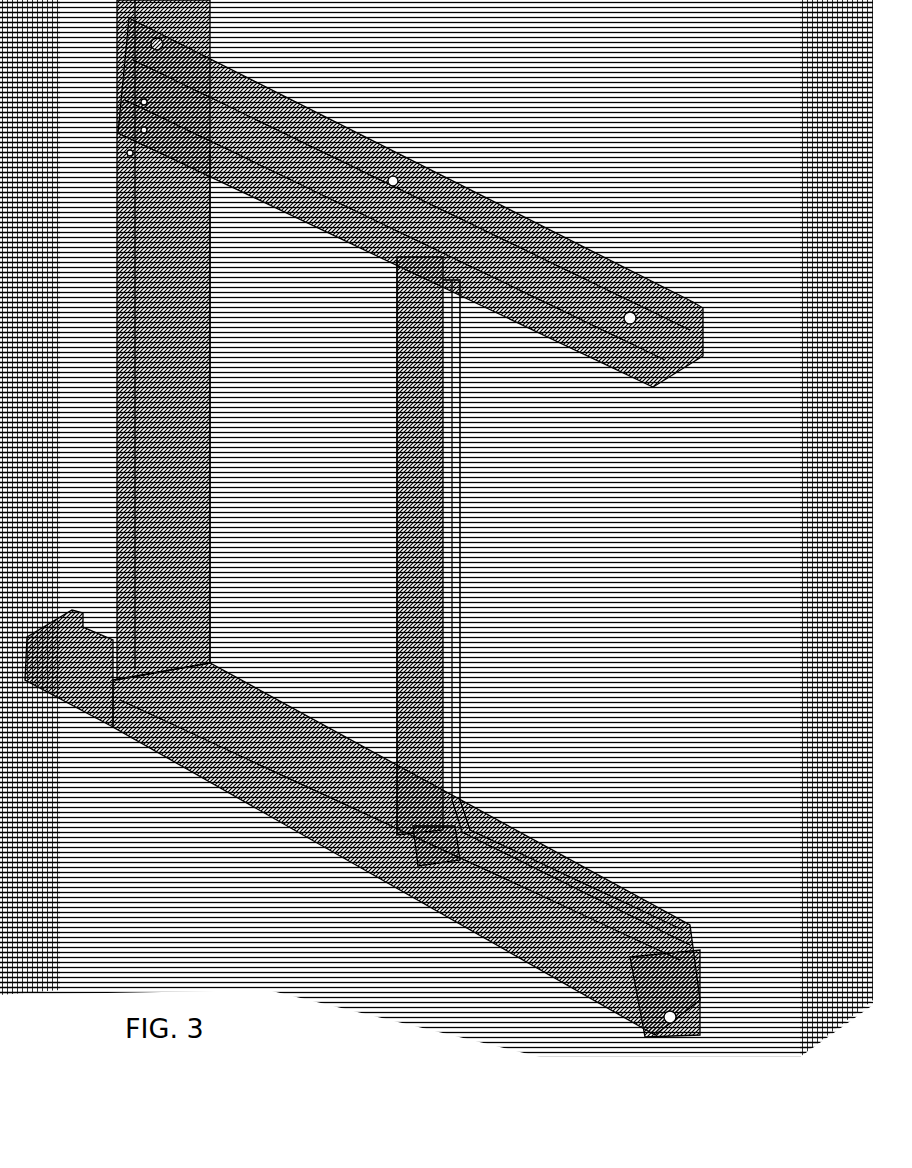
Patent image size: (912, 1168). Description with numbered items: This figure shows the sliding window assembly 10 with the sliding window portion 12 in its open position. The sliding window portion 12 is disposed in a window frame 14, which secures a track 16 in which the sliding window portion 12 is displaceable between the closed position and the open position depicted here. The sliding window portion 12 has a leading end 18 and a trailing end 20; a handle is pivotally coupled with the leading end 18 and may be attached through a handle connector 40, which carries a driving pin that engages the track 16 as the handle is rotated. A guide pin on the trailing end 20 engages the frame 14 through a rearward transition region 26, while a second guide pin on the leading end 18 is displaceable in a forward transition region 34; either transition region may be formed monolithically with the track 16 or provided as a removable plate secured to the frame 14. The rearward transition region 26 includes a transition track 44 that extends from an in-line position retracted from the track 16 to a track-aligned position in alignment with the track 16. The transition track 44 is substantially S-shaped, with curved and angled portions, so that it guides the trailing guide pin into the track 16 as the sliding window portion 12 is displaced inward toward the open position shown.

The sliding window assembly 10 is at (598, 138).
The sliding window portion 12 is at (233, 293).
The window frame 14 is at (329, 104).
The track 16 is at (532, 893).
The leading end 18 is at (117, 467).
The trailing end 20 is at (447, 513).
The rearward transition region 26 is at (633, 942).
The forward transition region 34 is at (443, 832).
The handle connector 40 is at (112, 696).
The transition track 44 is at (617, 967).